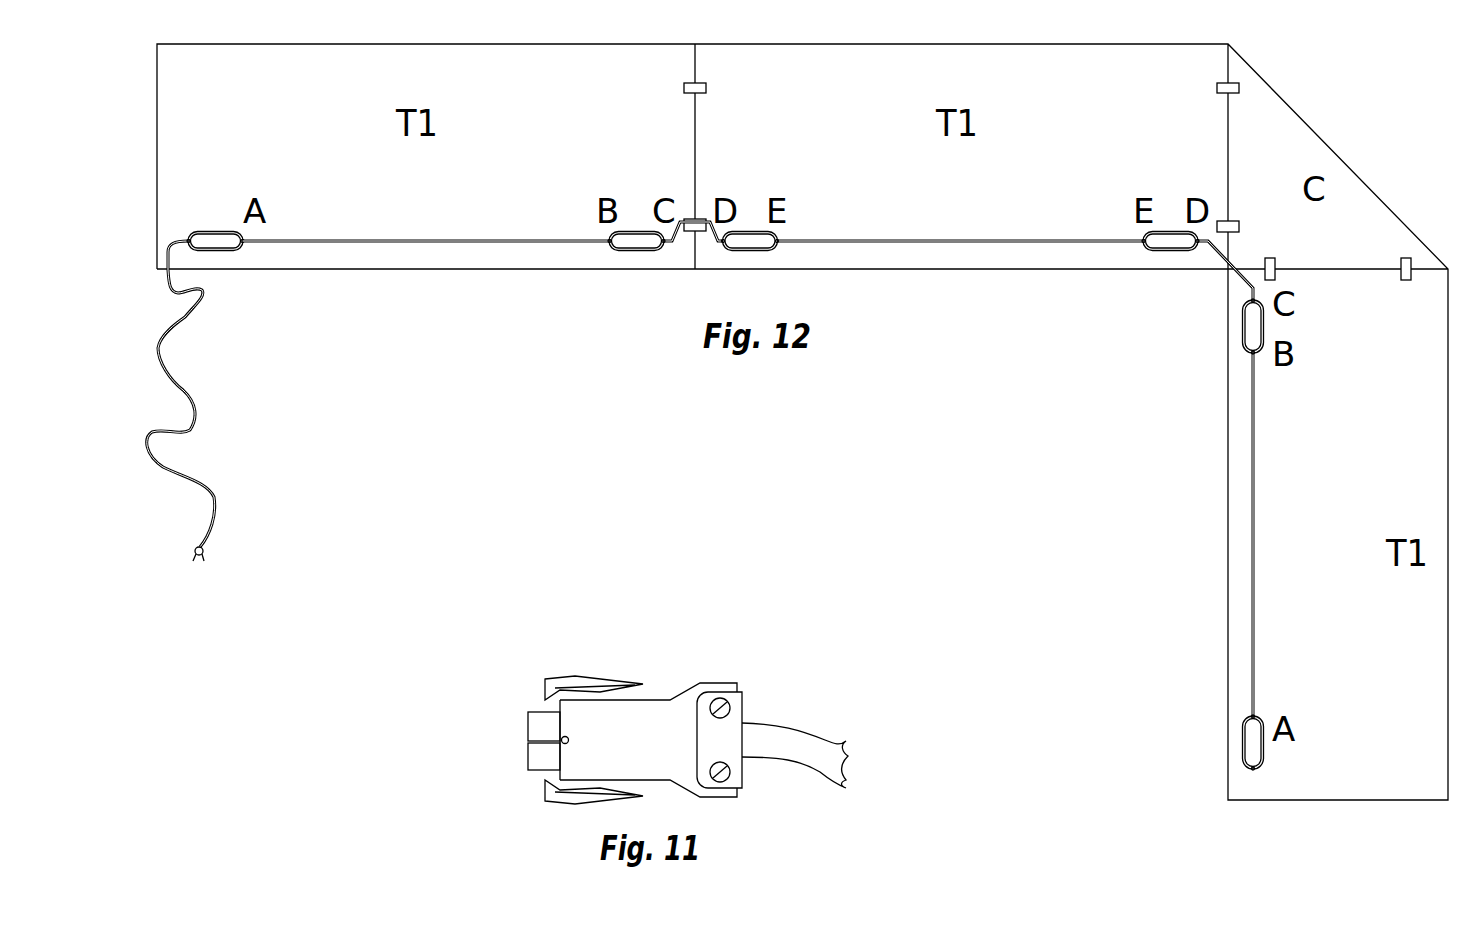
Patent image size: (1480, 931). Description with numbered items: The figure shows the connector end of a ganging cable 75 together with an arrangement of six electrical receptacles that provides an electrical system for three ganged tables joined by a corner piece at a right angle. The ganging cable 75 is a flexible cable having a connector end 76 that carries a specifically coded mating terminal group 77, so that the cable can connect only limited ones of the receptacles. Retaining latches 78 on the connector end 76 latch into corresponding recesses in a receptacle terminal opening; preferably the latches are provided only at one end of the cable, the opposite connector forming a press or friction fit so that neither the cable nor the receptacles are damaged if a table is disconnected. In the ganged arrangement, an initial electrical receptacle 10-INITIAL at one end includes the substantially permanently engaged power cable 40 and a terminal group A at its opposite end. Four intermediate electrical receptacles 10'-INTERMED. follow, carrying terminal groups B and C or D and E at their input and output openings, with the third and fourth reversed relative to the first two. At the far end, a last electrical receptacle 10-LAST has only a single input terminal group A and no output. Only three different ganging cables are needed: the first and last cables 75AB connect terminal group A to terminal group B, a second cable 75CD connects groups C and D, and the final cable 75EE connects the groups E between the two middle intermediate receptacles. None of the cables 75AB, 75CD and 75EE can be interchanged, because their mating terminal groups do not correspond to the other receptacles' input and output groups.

In FIG. 12, the initial electrical receptacle 10-INITIAL is at (200, 230).
In FIG. 12, the intermediate electrical receptacle 10'-INTERMED. is at (986, 296).
In FIG. 12, the last electrical receptacle 10-LAST is at (1242, 745).
In FIG. 12, the power cable 40 is at (185, 317).
In FIG. 12, the ganging cable AB 75AB is at (378, 238).
In FIG. 12, the ganging cable CD 75CD is at (690, 222).
In FIG. 12, the ganging cable EE 75EE is at (844, 238).
In FIG. 11, the ganging cable 75 is at (790, 727).
In FIG. 11, the connector end 76 is at (656, 698).
In FIG. 11, the mating terminal group 77 is at (540, 720).
In FIG. 11, the retaining latches 78 is at (576, 678).